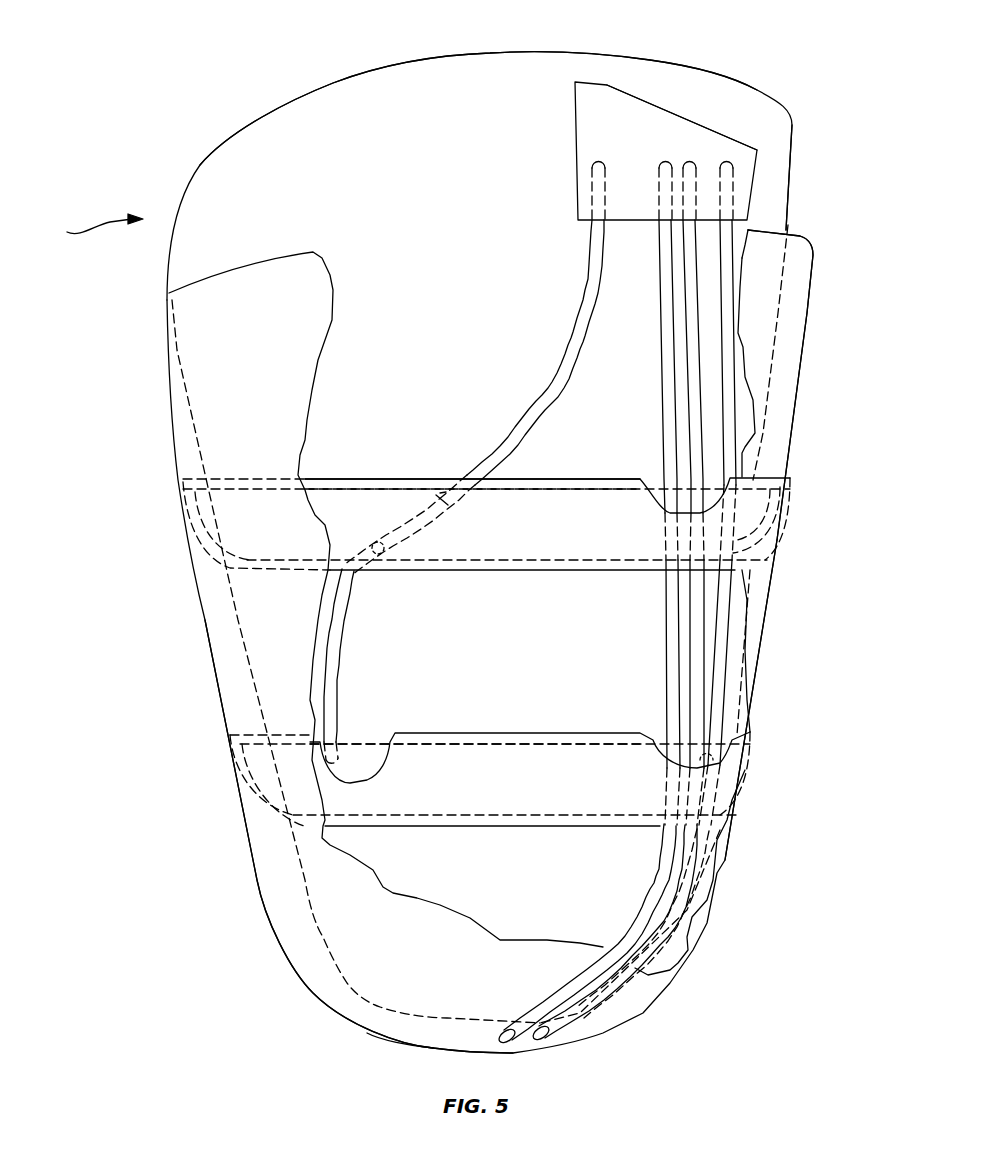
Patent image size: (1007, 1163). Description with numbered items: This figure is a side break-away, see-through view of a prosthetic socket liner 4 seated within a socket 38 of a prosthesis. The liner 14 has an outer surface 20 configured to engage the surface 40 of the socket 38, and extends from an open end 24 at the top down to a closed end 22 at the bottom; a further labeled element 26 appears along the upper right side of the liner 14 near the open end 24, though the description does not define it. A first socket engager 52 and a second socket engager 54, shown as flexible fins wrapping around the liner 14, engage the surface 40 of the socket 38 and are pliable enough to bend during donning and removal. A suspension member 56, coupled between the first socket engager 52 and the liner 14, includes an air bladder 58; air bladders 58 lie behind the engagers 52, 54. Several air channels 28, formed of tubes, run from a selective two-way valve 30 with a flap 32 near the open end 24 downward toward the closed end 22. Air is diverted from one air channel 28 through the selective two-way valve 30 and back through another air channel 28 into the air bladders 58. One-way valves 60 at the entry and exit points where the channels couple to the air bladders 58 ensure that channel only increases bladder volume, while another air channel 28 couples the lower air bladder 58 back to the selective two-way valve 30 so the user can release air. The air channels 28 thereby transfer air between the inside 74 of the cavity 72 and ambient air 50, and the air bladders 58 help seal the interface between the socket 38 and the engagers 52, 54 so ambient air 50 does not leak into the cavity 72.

The prosthetic socket liner 4 is at (94, 229).
The liner 14 is at (792, 193).
The outer surface 20 is at (441, 216).
The closed end 22 is at (390, 1010).
The open end 24 is at (262, 115).
The side strip 26 is at (786, 222).
The air channels 28 is at (542, 413).
The selective two-way valve 30 is at (578, 145).
The flap 32 is at (667, 110).
The socket 38 is at (268, 935).
The surface 40 is at (772, 467).
The ambient air 50 is at (829, 40).
The first socket engager 52 is at (202, 545).
The second socket engager 54 is at (247, 800).
The suspension member 56 is at (360, 479).
The air bladders 58 is at (405, 490).
The one-way valves 60 is at (442, 500).
The cavity 72 is at (410, 1027).
The inside 74 is at (447, 1040).